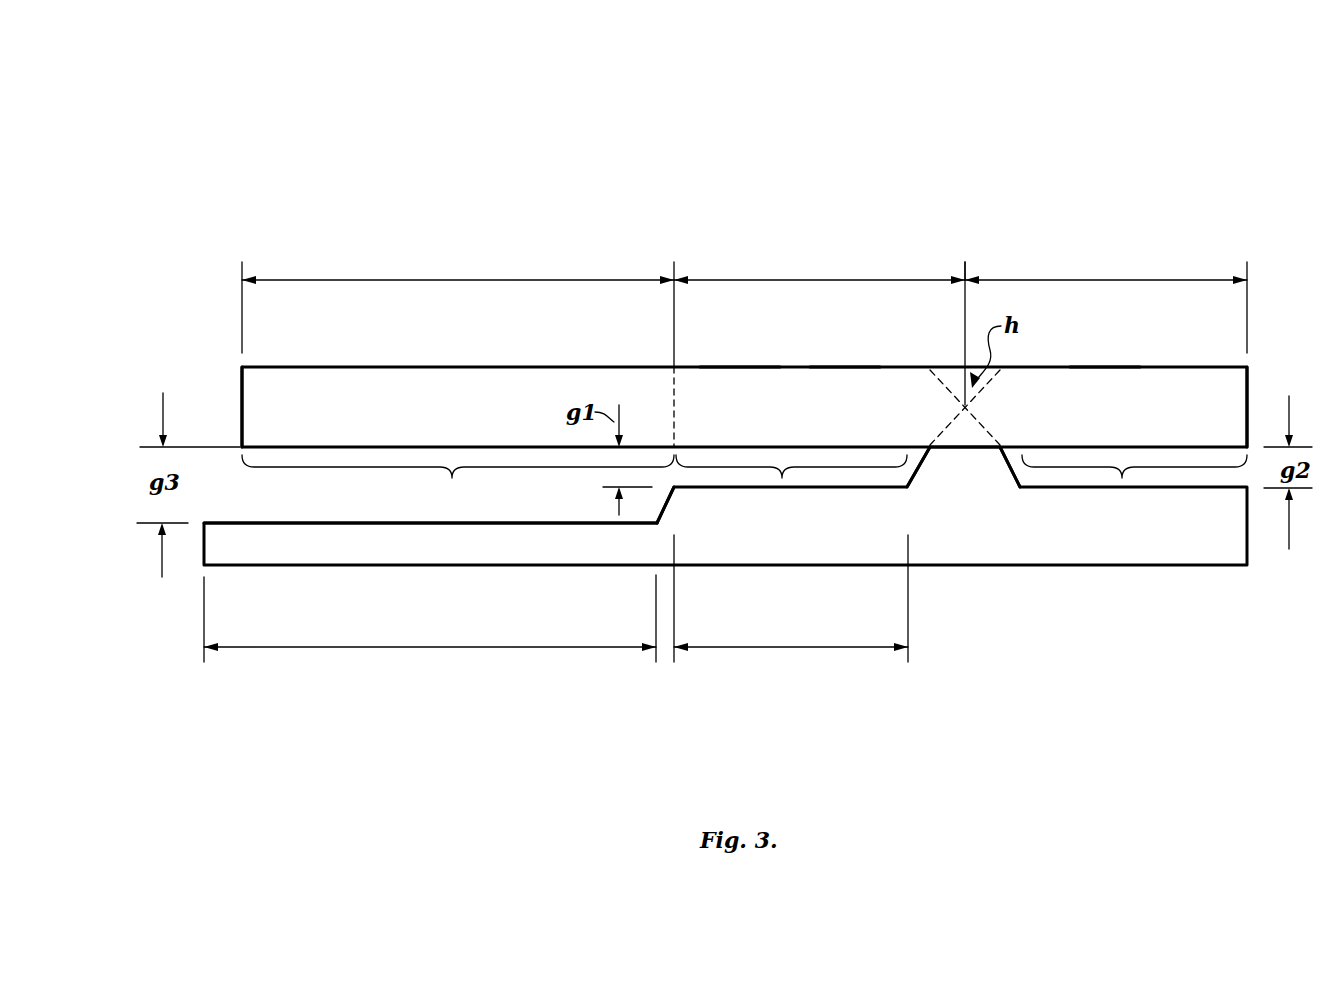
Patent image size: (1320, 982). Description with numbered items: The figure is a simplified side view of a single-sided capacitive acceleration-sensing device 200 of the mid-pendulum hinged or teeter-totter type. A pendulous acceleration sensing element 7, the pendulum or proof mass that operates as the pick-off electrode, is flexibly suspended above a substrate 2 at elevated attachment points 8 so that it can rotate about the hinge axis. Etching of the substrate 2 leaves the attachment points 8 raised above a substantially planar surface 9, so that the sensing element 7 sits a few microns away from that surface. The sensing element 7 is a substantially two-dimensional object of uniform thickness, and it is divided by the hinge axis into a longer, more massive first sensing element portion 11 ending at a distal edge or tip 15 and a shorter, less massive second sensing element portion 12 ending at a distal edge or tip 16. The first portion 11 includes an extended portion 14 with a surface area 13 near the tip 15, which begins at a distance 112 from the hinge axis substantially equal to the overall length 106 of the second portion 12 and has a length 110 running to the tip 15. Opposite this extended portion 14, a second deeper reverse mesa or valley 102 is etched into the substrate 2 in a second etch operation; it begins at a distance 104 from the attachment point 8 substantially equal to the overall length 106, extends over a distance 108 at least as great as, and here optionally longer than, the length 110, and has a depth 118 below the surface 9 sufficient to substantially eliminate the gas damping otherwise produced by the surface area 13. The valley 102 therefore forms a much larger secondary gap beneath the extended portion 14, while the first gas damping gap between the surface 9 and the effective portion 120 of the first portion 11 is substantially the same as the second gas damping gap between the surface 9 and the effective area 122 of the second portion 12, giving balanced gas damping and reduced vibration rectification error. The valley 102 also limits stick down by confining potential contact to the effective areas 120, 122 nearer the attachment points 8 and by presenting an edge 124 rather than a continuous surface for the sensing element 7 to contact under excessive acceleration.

The single-sided capacitive acceleration-sensing device 200 is at (924, 174).
The substrate 2 is at (1228, 536).
The acceleration sensing element 7 is at (741, 367).
The attachment points 8 is at (975, 480).
The substantially planar surface 9 is at (870, 489).
The first sensing element portion 11 is at (843, 367).
The second sensing element portion 12 is at (1105, 367).
The surface area 13 is at (458, 481).
The extended portion 14 is at (388, 412).
The distal edge or tip 15 is at (241, 386).
The distal edge or tip 16 is at (1248, 388).
The second deeper reverse mesa or valley 102 is at (432, 527).
The distance 104 is at (790, 648).
The overall length 106 is at (1092, 280).
The distance 108 is at (430, 648).
The length 110 is at (455, 280).
The distance 112 is at (818, 280).
The depth 118 is at (162, 548).
The effective portion 120 is at (782, 478).
The effective area 122 is at (1122, 478).
The edge 124 is at (676, 488).